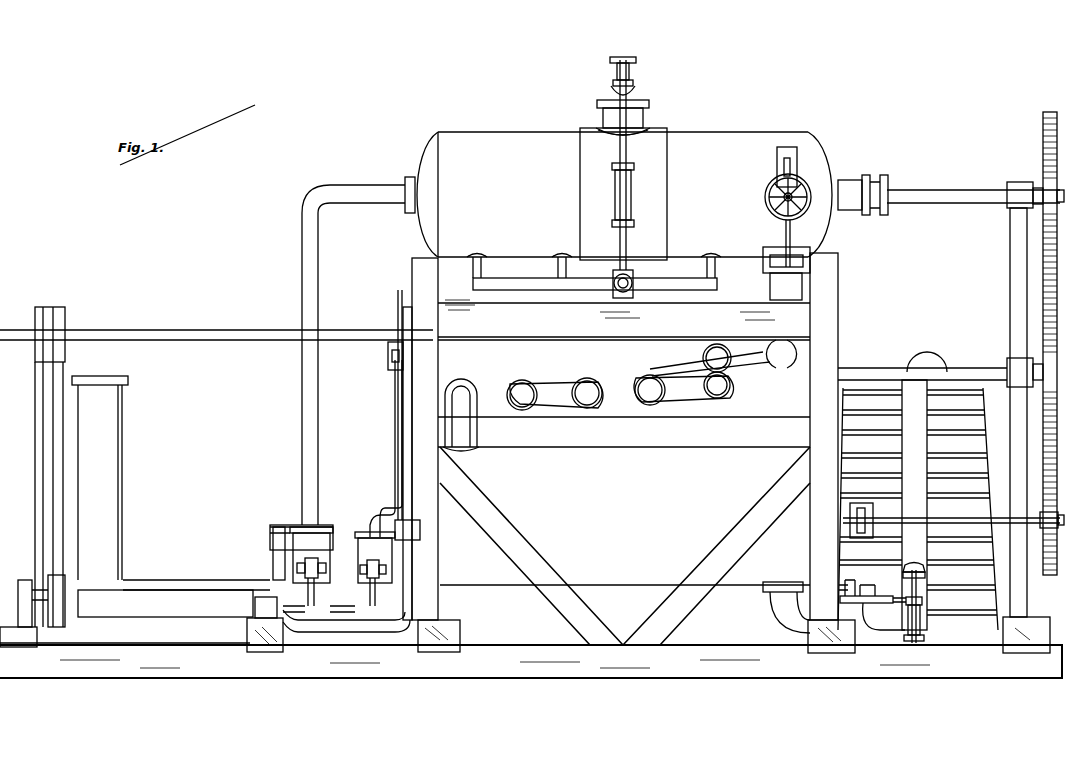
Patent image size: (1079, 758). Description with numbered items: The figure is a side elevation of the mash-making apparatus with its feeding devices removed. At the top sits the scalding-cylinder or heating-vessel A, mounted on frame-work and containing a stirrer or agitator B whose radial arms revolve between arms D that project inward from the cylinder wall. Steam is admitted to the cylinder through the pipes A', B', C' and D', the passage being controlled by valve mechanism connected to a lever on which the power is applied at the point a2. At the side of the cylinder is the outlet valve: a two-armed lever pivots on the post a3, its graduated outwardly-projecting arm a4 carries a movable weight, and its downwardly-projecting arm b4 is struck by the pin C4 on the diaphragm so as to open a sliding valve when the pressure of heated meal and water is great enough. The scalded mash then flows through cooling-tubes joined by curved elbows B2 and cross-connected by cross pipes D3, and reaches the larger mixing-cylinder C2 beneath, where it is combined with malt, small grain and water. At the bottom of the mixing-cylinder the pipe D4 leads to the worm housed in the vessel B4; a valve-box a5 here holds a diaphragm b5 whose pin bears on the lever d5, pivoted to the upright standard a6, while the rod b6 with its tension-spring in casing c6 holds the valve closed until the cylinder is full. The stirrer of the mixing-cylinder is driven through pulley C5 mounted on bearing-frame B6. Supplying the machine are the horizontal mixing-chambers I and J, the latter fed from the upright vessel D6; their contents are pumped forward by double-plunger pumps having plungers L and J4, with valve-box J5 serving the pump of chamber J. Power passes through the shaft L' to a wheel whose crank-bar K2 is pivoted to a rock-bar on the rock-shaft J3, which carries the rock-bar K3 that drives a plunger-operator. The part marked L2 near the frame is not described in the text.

The scalding-cylinder A is at (732, 163).
The steam pipe A' is at (477, 295).
The steam pipe B' is at (562, 295).
The steam pipe C' is at (708, 295).
The point of application of power a2 is at (594, 276).
The post a3 is at (800, 185).
The outwardly-projecting arm a4 is at (797, 165).
The valve-box a5 is at (884, 623).
The upright standard a6 is at (840, 592).
The downwardly-projecting arm b4 is at (784, 206).
The reciprocating diaphragm b5 is at (763, 266).
The rod b6 is at (922, 598).
The mixing-cylinder C2 is at (629, 453).
The pin C4 is at (960, 517).
The pulley C5 is at (868, 580).
The casing c6 is at (921, 603).
The stirrer B is at (1040, 343).
The curved elbows B2 is at (652, 375).
The vessel B4 is at (980, 452).
The bearing-frame B6 is at (1024, 430).
The arms D is at (954, 373).
The steam pipe D' is at (461, 415).
The cross pipes D3 is at (786, 607).
The pipe D4 is at (918, 505).
The upright vessel D6 is at (100, 478).
The lever d5 is at (860, 585).
The horizontal mixing-chamber I is at (216, 477).
The horizontal mixing-chamber J is at (165, 603).
The rock-shaft J3 is at (345, 632).
The double plungers J4 is at (375, 569).
The valve-box J5 is at (301, 566).
The crank-bar K2 is at (395, 415).
The rock-bar K3 is at (319, 605).
The double plungers L is at (363, 597).
The shaft L' is at (505, 359).
The lever L2 is at (412, 320).